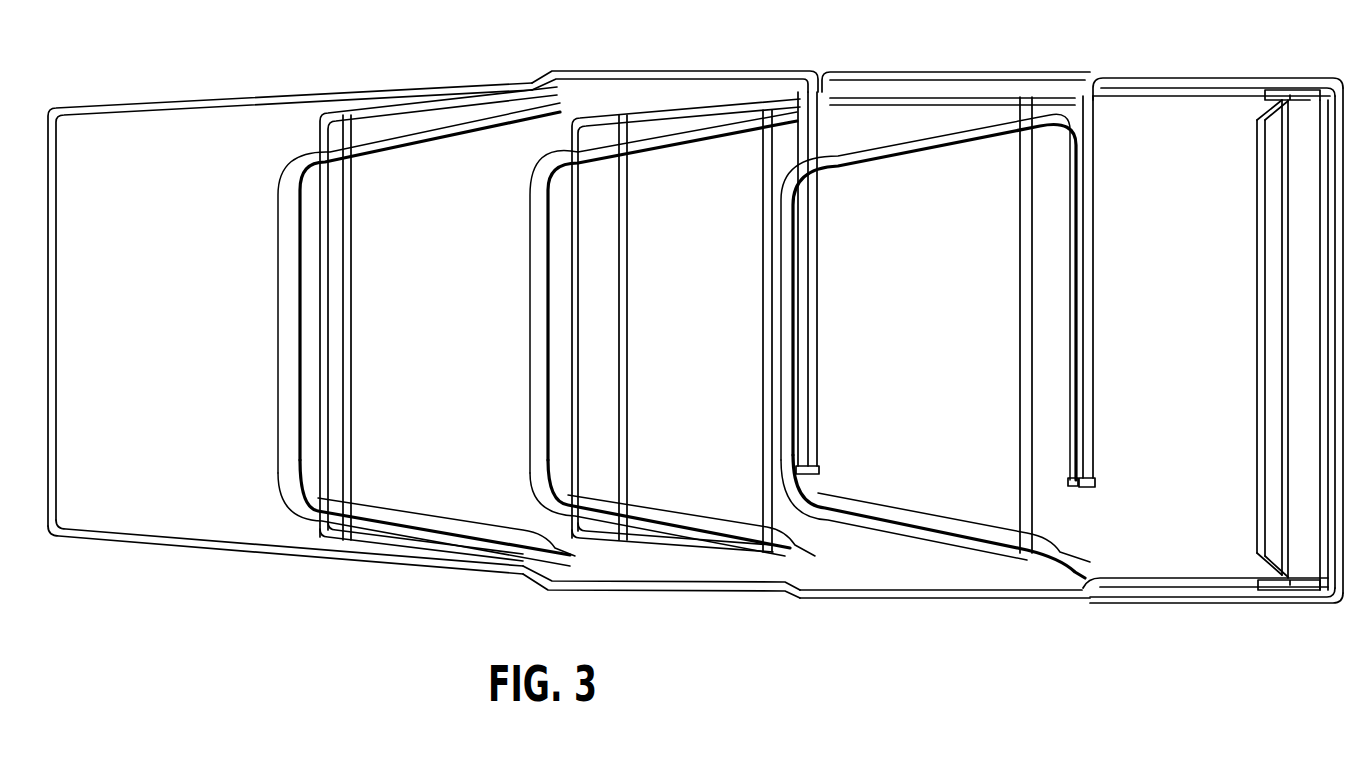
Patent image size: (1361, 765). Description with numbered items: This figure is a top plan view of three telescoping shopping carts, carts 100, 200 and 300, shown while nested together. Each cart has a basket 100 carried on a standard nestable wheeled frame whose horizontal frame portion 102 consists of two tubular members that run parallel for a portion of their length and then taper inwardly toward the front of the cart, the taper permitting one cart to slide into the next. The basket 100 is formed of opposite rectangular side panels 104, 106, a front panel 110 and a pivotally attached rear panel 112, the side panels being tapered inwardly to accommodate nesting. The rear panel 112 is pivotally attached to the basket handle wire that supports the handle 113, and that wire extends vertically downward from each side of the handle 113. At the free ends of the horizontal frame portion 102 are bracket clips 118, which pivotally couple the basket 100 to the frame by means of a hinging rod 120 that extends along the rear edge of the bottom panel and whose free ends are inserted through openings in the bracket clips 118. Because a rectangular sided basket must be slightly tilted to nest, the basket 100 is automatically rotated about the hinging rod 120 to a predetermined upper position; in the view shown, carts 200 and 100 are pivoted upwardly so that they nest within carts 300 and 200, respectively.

The basket 100 is at (1313, 170).
The cart 200 is at (1103, 345).
The cart 300 is at (820, 344).
The horizontal frame portion 102 is at (286, 206).
The side panel 104 is at (218, 558).
The side panel 106 is at (238, 104).
The front panel 110 is at (57, 318).
The rear panel 112 is at (347, 360).
The handle 113 is at (812, 382).
The bracket clip 118 is at (1265, 78).
The hinging rod 120 is at (763, 326).